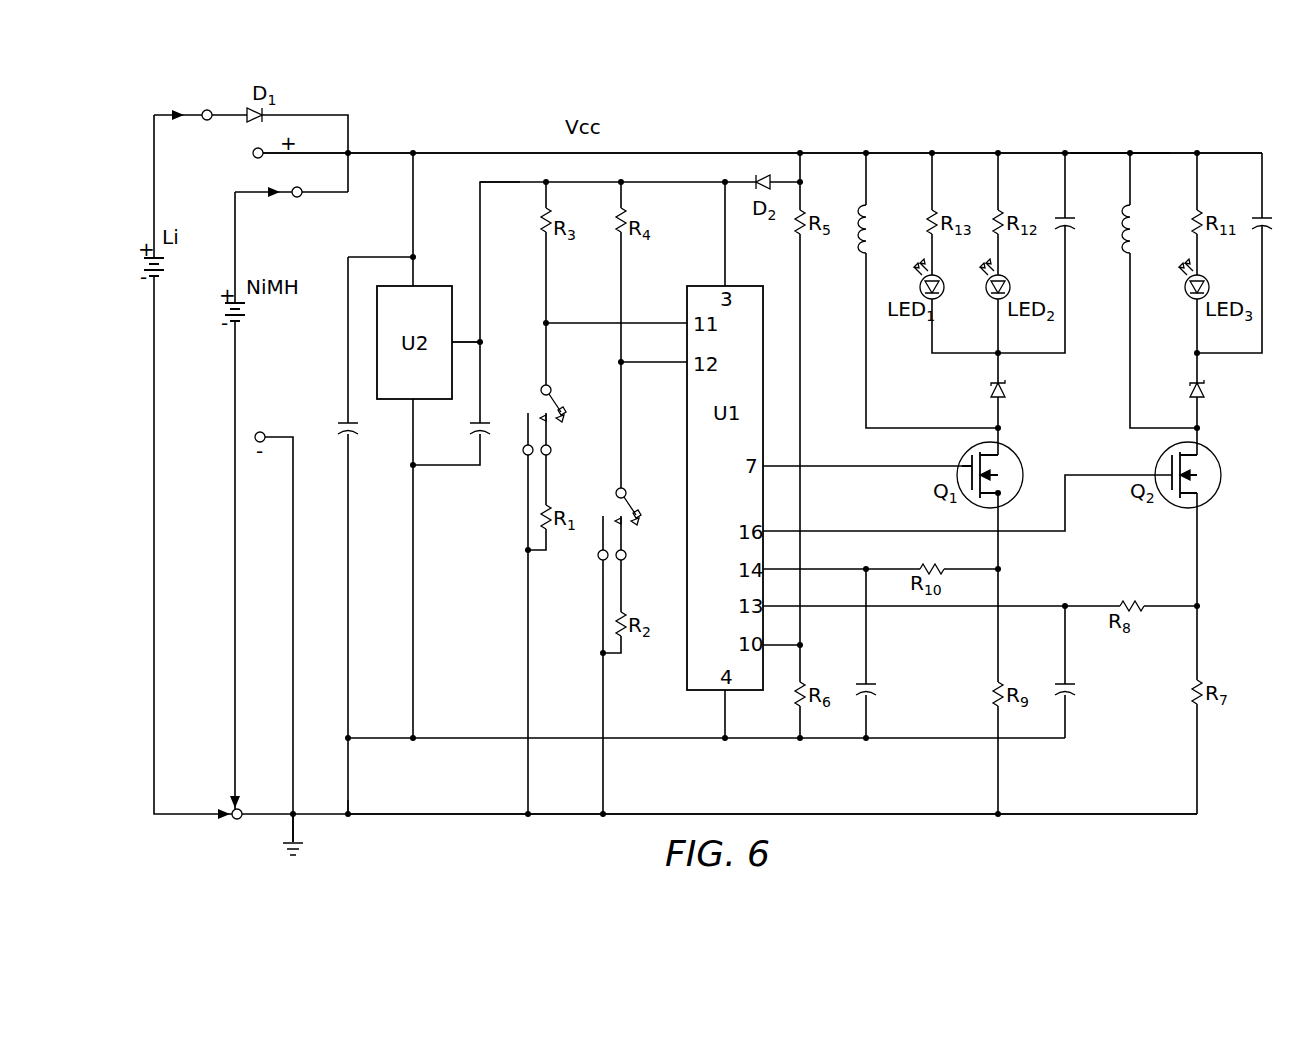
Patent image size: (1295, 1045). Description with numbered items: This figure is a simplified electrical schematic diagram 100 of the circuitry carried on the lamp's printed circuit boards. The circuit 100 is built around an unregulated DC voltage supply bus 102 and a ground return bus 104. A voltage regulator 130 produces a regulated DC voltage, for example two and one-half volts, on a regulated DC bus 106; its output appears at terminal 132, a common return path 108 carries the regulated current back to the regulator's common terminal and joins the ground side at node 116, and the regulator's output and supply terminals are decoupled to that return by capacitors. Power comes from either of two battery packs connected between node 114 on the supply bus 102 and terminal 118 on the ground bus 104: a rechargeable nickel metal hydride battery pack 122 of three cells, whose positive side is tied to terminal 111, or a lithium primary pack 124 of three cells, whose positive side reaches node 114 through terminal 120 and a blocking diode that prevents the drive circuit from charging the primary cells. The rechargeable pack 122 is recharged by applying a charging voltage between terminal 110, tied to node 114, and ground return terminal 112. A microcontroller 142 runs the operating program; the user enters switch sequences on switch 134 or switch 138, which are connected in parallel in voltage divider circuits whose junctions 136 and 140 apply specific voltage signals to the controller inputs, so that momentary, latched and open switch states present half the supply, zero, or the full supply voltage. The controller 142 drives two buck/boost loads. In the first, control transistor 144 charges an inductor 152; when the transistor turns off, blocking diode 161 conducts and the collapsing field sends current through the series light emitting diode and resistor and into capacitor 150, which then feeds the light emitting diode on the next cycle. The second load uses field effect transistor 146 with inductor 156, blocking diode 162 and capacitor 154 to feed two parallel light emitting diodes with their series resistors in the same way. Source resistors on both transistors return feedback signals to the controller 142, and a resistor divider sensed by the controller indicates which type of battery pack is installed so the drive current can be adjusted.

The simplified electrical schematic diagram 100 is at (1015, 138).
The unregulated DC voltage supply bus 102 is at (1100, 152).
The ground return bus 104 is at (282, 810).
The DC bus 106 is at (511, 180).
The common return path 108 is at (456, 818).
The terminal 110 is at (252, 161).
The terminal 111 is at (299, 199).
The ground return terminal 112 is at (261, 431).
The node 114 is at (354, 150).
The ground junction 116 is at (352, 809).
The terminal 118 is at (236, 821).
The terminal 120 is at (203, 109).
The rechargeable NiMH battery pack 122 is at (243, 316).
The LiMnO2 primary cell 124 is at (163, 270).
The voltage regulator U2 130 is at (429, 286).
The terminal of the voltage regulator 132 is at (484, 342).
The switch SW1 134 is at (552, 398).
The switch input node 136 is at (550, 319).
The switch SW2 138 is at (627, 505).
The second switch input node 140 is at (626, 364).
The microController 142 is at (734, 286).
The control transistor 144 is at (1180, 508).
The Field Effect Transistor 146 is at (1020, 463).
The capacitor 150 is at (1255, 220).
The inductor 152 is at (1134, 220).
The capacitor 154 is at (1058, 220).
The inductor 156 is at (875, 220).
The blocking diode 161 is at (1204, 392).
The blocking diode 162 is at (1005, 392).